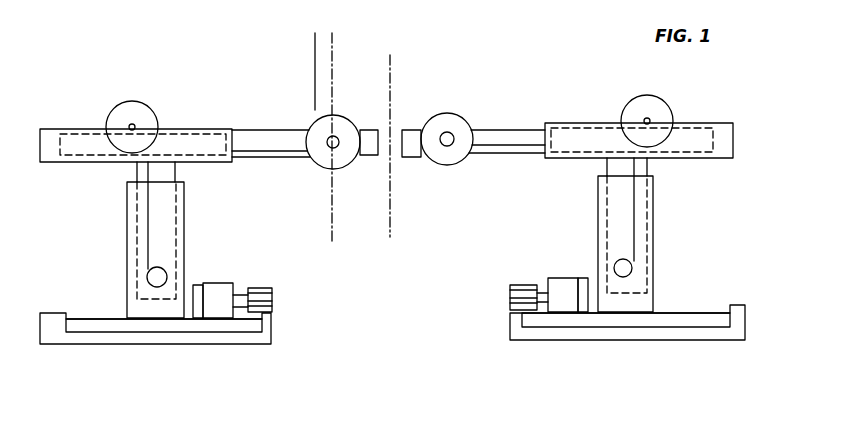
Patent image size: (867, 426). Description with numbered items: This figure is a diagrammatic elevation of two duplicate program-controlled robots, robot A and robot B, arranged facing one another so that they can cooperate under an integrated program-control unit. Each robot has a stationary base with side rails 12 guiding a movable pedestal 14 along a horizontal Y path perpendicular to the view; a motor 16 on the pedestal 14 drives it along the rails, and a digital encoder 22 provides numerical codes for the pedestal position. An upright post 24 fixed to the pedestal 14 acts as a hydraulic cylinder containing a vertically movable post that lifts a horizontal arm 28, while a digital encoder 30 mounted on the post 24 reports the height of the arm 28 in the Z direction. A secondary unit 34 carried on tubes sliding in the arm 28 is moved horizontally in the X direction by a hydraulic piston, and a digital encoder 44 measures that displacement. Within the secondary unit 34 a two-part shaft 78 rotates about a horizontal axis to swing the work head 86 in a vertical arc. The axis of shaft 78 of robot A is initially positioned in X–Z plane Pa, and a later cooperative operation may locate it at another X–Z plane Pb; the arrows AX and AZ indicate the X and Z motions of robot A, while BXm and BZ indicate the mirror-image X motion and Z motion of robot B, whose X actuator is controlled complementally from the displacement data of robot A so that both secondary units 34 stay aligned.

The side rails 12 is at (272, 323).
The pedestal 14 is at (110, 322).
The motor 16 is at (222, 286).
The digital encoder 22 is at (194, 286).
The upright post 24 is at (193, 202).
The horizontal arm 28 is at (242, 128).
The digital encoder 30 is at (161, 268).
The secondary unit 34 is at (345, 118).
The digital encoder 44 is at (112, 123).
The two-part shaft 78 is at (328, 137).
The work head 86 is at (368, 157).
The robot A is at (126, 99).
The robot B is at (599, 94).
The X–Z plane Pa is at (332, 53).
The X–Z plane Pb is at (315, 88).
The horizontal movement of A AX is at (312, 195).
The vertical movement of A AZ is at (93, 217).
The horizontal movement of B BXm is at (508, 193).
The vertical movement of B BZ is at (677, 210).